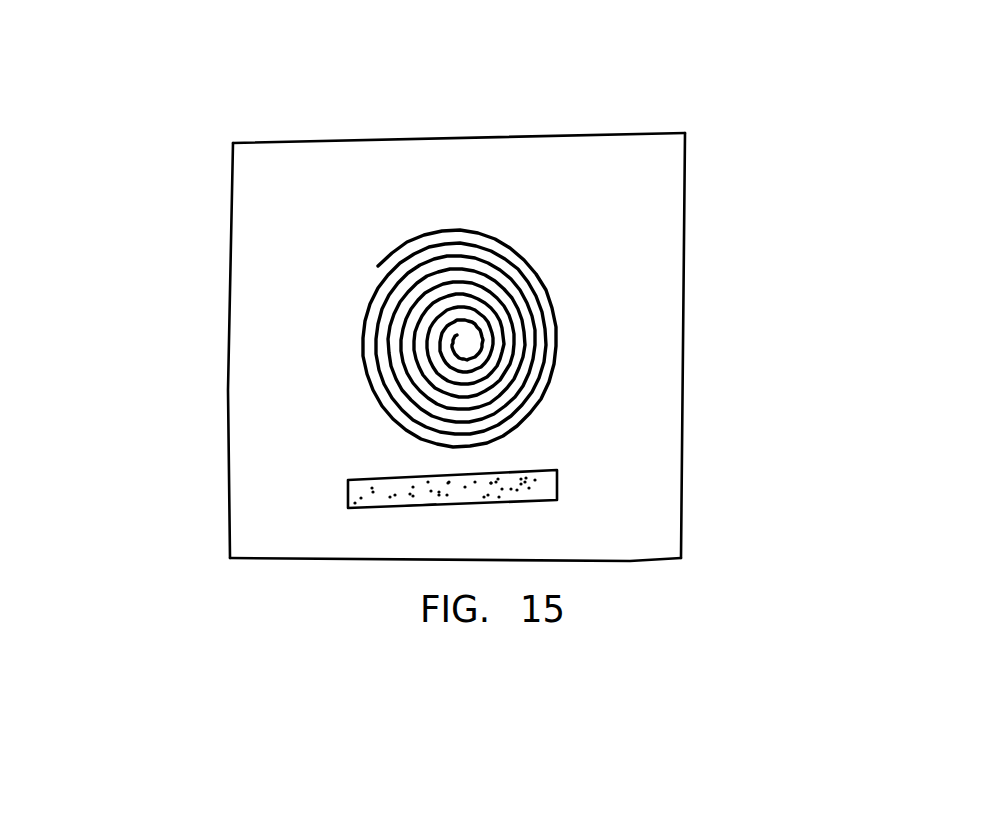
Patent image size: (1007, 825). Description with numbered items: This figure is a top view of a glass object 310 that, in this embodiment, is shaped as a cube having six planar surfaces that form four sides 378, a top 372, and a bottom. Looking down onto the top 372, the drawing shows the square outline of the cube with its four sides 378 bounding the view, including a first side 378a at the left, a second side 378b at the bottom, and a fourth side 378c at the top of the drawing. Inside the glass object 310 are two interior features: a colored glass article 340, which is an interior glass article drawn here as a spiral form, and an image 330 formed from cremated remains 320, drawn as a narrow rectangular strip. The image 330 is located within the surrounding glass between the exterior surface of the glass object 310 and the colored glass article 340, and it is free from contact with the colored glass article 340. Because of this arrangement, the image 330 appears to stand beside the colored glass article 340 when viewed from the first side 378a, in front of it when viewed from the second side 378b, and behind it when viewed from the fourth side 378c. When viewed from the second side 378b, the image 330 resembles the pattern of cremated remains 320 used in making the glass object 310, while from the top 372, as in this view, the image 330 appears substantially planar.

The glass object 310 is at (714, 72).
The cremated remains 320 is at (556, 480).
The image 330 is at (418, 508).
The colored glass article 340 is at (545, 360).
The top 372 is at (360, 199).
The sides 378 is at (687, 264).
The first side 378a is at (228, 389).
The second side 378b is at (636, 562).
The fourth side 378c is at (435, 136).